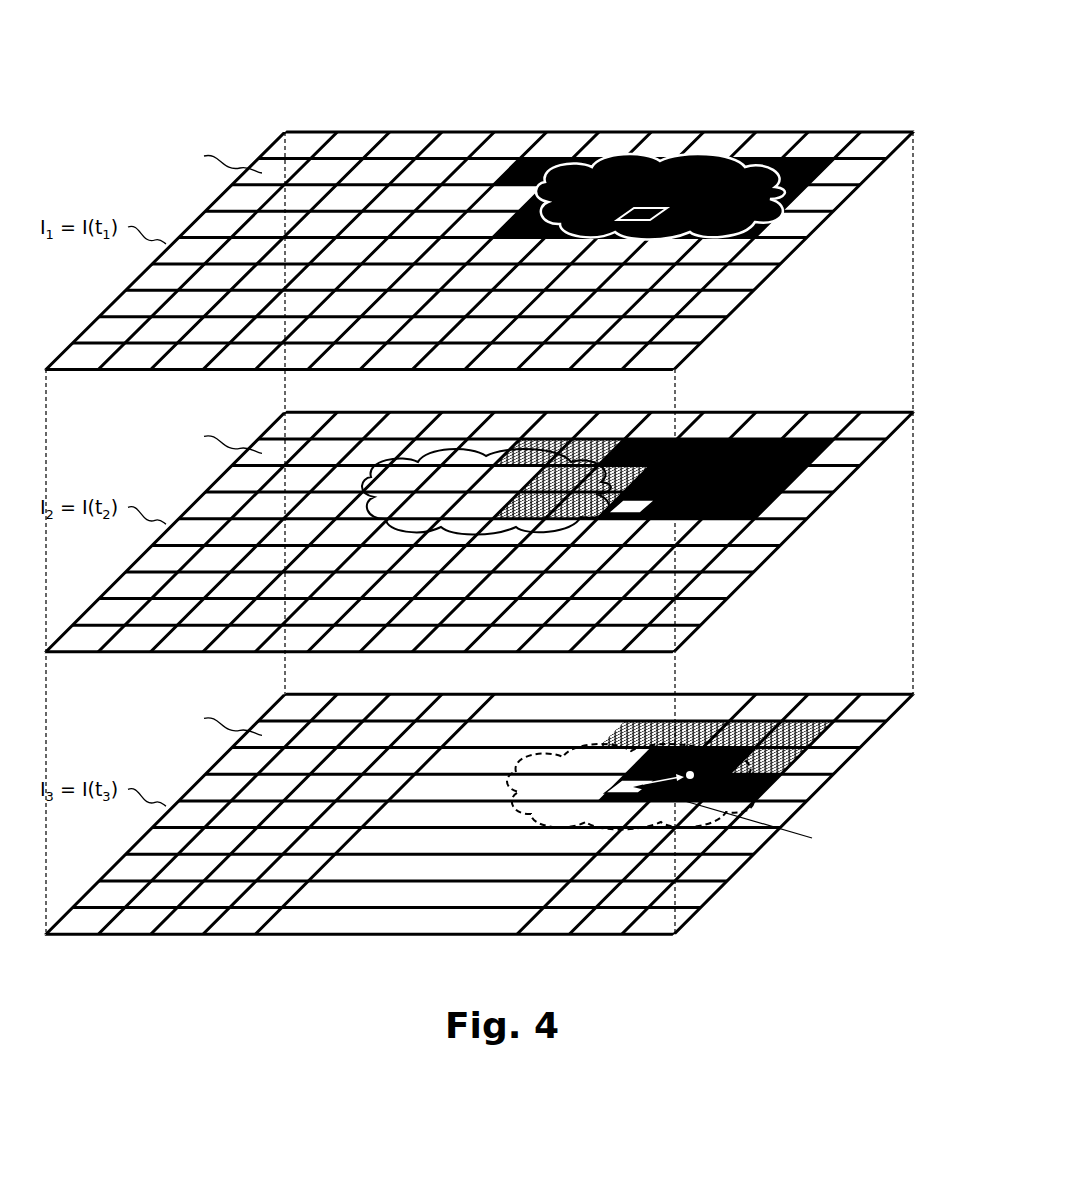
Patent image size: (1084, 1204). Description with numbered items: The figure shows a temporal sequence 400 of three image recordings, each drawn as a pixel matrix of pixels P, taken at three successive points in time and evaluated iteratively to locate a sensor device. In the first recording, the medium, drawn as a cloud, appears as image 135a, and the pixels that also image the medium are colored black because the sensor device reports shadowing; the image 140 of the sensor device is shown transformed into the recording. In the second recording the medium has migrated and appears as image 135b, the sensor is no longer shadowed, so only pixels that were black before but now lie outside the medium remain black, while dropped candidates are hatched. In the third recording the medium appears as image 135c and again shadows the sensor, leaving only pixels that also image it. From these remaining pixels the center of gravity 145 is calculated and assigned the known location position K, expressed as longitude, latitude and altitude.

The temporal sequence of image recordings 400 is at (922, 96).
The image of the medium in the first image recording 135a is at (736, 203).
The image of the medium in the second image recording 135b is at (531, 446).
The image of the medium in the third image recording 135c is at (535, 750).
The image of the sensor device 140 is at (638, 204).
The center of gravity 145 is at (679, 787).
The pixel P is at (224, 440).
The location position K is at (793, 830).